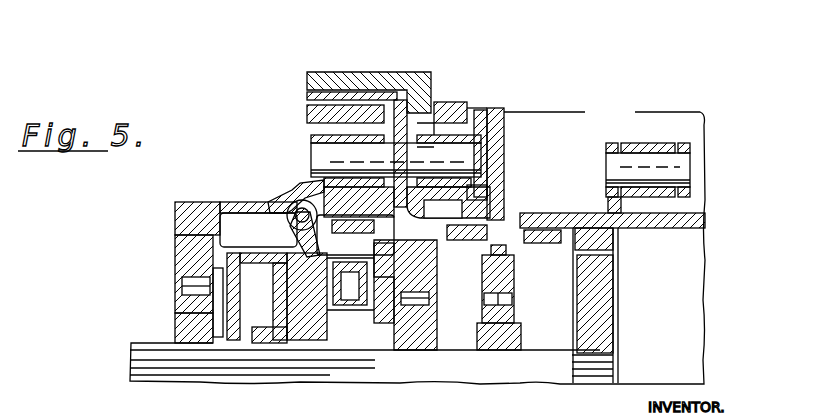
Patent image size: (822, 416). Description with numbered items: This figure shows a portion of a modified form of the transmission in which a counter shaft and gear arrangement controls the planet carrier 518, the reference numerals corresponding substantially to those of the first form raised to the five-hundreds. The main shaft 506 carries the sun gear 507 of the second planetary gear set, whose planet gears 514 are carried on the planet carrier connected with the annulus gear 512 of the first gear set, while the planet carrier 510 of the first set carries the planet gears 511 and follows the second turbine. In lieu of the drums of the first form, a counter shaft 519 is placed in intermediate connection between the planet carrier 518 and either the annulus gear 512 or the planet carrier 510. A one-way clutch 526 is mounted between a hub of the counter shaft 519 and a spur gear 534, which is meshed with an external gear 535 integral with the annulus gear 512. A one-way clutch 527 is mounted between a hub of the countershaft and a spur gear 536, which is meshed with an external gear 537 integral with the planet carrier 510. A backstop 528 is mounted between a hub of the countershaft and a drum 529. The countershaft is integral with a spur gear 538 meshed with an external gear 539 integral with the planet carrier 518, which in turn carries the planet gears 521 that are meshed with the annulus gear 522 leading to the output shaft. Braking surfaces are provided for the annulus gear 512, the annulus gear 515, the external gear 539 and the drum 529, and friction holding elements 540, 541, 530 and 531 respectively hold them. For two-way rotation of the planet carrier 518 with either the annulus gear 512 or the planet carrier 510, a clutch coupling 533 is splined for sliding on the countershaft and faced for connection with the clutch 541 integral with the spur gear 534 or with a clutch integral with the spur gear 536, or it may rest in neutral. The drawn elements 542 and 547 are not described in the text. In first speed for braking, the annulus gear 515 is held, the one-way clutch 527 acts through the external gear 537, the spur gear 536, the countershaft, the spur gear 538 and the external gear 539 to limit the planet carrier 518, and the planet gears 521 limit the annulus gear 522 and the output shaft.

The main shaft 506 is at (424, 43).
The sun gear of second planetary gear set 507 is at (444, 107).
The planet carrier 510 is at (310, 182).
The planet gears 511 is at (317, 153).
The annulus gear 512 is at (319, 234).
The planet gears 514 is at (453, 180).
The annulus gear 515 is at (407, 203).
The planet carrier 518 is at (628, 115).
The counter shaft 519 is at (473, 376).
The planet gears 521 is at (678, 167).
The annulus gear 522 is at (671, 202).
The one-way clutch 526 is at (429, 298).
The one-way clutch 527 is at (188, 287).
The backstop 528 is at (512, 315).
The drum 529 is at (507, 267).
The friction holding element 530 is at (527, 243).
The friction holding element 531 is at (514, 262).
The clutch coupling 533 is at (330, 296).
The spur gear 534 is at (427, 267).
The external gear 535 is at (432, 228).
The spur gear 536 is at (182, 243).
The external gear 537 is at (175, 212).
The spur gear 538 is at (601, 267).
The external gear 539 is at (611, 233).
The friction holding element 540 is at (355, 236).
The friction holding element 541 is at (490, 227).
The plate 542 is at (247, 310).
The plate 547 is at (370, 313).